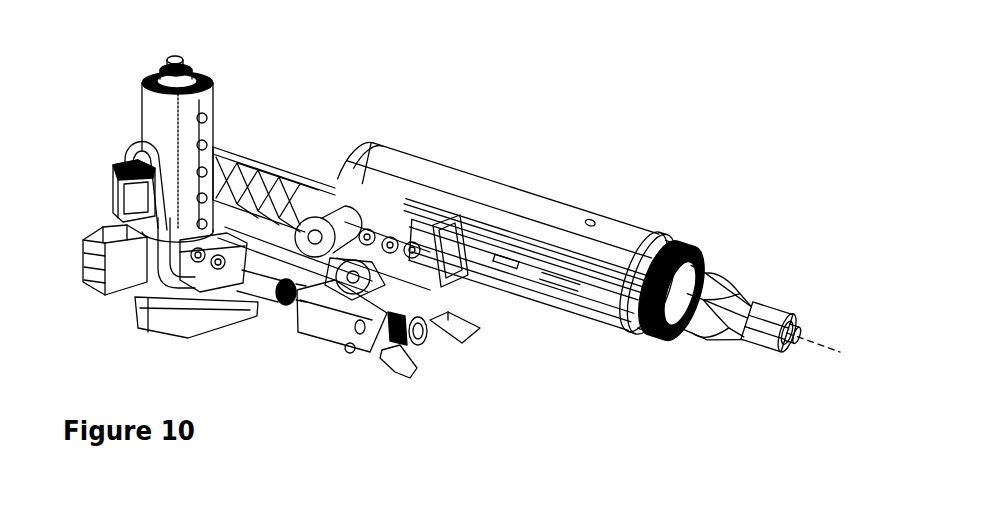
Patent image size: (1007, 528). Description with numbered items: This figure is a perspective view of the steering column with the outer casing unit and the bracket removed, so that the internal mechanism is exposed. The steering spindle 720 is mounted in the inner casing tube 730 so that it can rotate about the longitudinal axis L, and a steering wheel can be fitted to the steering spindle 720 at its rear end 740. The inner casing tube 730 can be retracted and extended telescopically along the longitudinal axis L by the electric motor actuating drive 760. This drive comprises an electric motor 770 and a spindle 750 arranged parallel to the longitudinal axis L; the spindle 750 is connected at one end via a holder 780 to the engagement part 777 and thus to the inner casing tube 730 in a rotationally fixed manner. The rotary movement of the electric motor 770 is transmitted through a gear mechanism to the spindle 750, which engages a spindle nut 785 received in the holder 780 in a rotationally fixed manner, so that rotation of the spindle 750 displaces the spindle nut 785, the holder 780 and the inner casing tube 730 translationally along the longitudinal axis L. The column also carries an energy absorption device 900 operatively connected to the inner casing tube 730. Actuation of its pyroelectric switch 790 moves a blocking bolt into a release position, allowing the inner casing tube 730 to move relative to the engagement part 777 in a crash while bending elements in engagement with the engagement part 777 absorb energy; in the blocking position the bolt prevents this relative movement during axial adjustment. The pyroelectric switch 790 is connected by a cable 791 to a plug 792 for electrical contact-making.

The steering spindle 720 is at (700, 284).
The inner casing tube 730 is at (622, 237).
The rear end / outer casing unit 740 is at (248, 126).
The spindle 750 is at (280, 310).
The electric motor actuating drive 760 is at (118, 313).
The electric motor 770 is at (160, 112).
The engagement part 777 is at (258, 170).
The holder 780 is at (340, 327).
The spindle nut 785 is at (385, 303).
The pyroelectric switch 790 is at (330, 183).
The cable 791 is at (327, 230).
The plug 792 is at (373, 273).
The energy absorption device 900 is at (512, 293).
The longitudinal axis L is at (831, 348).